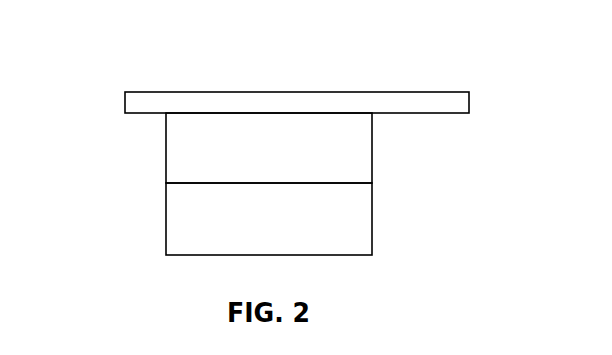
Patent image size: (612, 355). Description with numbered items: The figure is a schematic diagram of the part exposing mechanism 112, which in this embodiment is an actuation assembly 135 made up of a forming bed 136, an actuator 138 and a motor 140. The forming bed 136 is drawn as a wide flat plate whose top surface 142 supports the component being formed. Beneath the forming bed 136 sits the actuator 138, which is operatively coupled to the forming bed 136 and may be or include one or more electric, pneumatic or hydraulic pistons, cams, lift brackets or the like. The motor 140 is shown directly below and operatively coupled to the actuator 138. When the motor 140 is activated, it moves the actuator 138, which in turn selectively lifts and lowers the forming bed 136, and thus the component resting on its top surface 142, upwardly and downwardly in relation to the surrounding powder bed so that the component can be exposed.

The part exposing mechanism 112 is at (121, 57).
The actuation assembly 135 is at (485, 132).
The forming bed 136 is at (425, 91).
The actuator 138 is at (372, 148).
The motor 140 is at (372, 218).
The top surface 142 is at (325, 91).